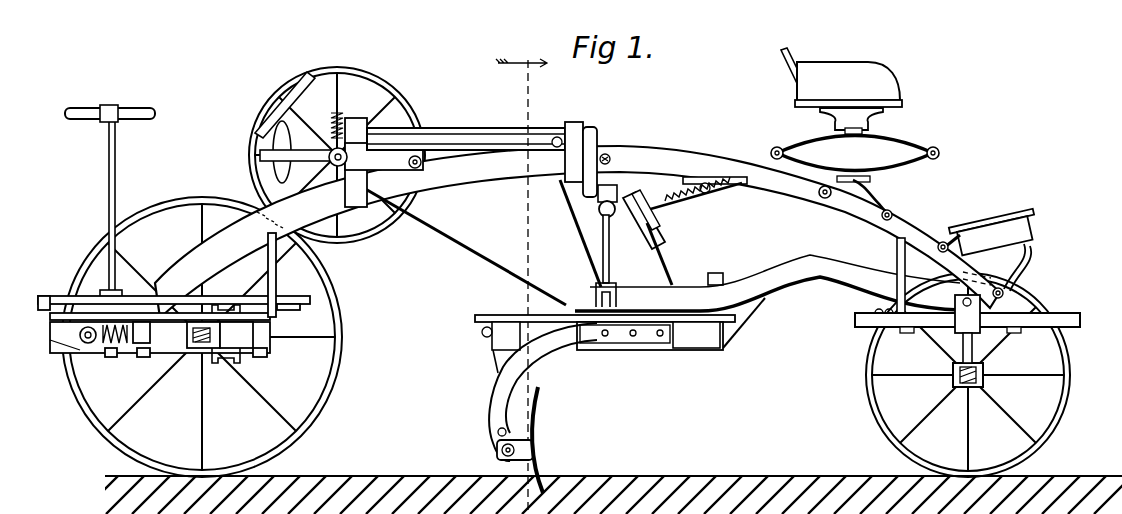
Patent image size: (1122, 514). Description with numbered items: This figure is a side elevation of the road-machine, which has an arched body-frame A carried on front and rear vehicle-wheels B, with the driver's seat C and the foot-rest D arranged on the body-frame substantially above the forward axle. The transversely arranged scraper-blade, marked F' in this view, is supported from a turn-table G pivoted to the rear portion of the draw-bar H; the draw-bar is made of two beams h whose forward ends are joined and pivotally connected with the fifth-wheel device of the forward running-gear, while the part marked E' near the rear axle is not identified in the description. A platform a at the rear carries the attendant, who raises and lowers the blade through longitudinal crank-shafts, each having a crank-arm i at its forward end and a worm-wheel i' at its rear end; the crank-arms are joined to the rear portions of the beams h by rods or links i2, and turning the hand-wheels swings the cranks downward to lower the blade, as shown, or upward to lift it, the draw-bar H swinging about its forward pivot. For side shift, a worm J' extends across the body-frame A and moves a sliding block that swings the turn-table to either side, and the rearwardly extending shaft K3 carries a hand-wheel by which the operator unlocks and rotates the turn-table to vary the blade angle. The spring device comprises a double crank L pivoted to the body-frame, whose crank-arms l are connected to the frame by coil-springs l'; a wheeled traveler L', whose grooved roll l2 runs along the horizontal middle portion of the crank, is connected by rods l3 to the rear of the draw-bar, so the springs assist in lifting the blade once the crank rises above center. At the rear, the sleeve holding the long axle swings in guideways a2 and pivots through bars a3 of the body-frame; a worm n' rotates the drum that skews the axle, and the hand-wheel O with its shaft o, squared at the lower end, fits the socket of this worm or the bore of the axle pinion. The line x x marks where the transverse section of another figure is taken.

The arched body-frame A is at (670, 157).
The vehicle-wheels B is at (318, 420).
The driver's seat C is at (883, 83).
The foot-rest D is at (1005, 215).
The rear axle pivot E' is at (967, 300).
The scraper blade F' is at (543, 408).
The turn-table G is at (703, 333).
The draw-bar H is at (767, 312).
The beams h is at (788, 268).
The worm J' is at (563, 138).
The rearwardly-extending shaft K3 is at (480, 252).
The double crank L is at (693, 207).
The wheeled traveler L' is at (634, 254).
The crank-arms l is at (667, 254).
The coil-springs l' is at (711, 206).
The roll or wheel l2 is at (627, 207).
The rods l3 is at (678, 279).
The hand-wheel O is at (97, 108).
The shaft o is at (107, 187).
The platform a is at (130, 300).
The guideways a2 is at (167, 320).
The bars or beams a3 is at (227, 308).
The worm n' is at (113, 368).
The crank-arm i is at (479, 157).
The worm-wheel i' is at (337, 137).
The rods or links i2 is at (600, 256).
The section line x is at (521, 274).